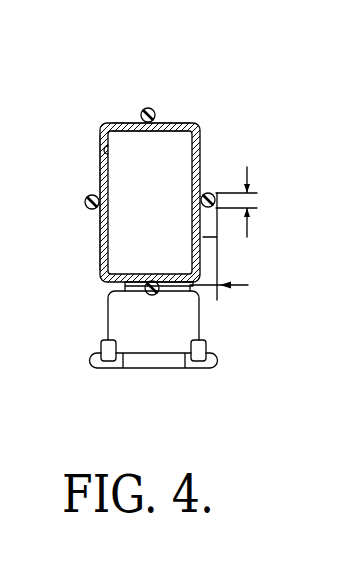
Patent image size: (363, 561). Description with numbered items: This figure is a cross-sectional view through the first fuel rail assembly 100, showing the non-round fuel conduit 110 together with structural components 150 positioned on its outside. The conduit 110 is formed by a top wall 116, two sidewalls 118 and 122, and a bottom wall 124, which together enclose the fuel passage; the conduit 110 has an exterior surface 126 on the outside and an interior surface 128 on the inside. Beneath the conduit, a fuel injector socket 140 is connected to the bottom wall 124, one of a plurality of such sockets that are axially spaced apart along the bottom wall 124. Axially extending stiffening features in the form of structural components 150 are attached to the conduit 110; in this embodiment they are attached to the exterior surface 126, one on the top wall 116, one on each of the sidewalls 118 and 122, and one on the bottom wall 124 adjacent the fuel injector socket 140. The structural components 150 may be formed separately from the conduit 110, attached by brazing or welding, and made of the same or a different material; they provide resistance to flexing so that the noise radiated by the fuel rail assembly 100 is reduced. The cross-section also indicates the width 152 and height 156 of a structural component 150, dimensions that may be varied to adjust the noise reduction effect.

The first fuel rail assembly 100 is at (252, 365).
The non-round fuel conduit 110 is at (206, 117).
The top wall 116 is at (128, 123).
The sidewall 118 is at (222, 240).
The sidewall 122 is at (100, 221).
The bottom wall 124 is at (122, 283).
The exterior surface 126 is at (172, 123).
The interior surface 128 is at (100, 144).
The fuel injector socket 140 is at (140, 318).
The structural component 150 is at (147, 107).
The width 152 is at (252, 200).
The height 156 is at (210, 290).